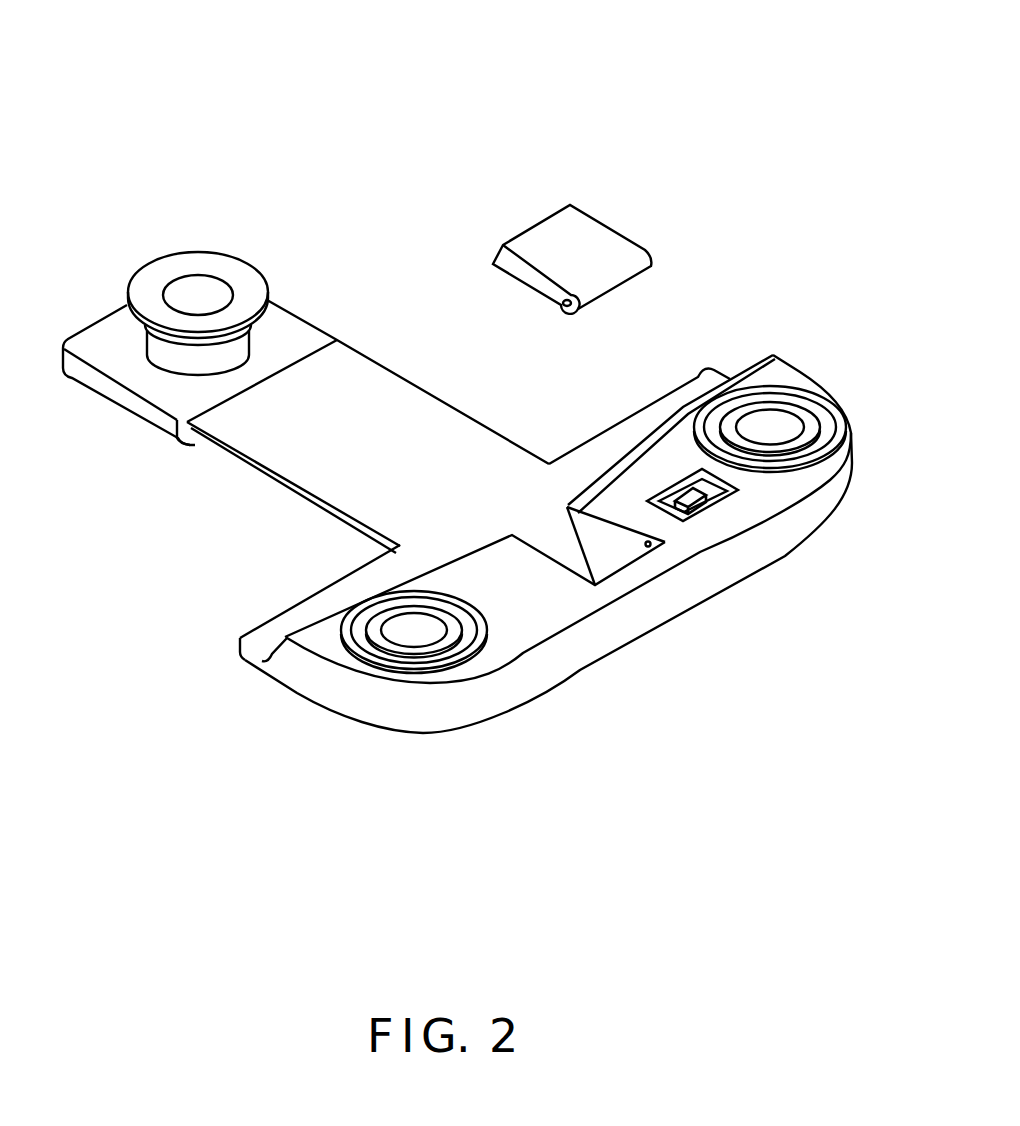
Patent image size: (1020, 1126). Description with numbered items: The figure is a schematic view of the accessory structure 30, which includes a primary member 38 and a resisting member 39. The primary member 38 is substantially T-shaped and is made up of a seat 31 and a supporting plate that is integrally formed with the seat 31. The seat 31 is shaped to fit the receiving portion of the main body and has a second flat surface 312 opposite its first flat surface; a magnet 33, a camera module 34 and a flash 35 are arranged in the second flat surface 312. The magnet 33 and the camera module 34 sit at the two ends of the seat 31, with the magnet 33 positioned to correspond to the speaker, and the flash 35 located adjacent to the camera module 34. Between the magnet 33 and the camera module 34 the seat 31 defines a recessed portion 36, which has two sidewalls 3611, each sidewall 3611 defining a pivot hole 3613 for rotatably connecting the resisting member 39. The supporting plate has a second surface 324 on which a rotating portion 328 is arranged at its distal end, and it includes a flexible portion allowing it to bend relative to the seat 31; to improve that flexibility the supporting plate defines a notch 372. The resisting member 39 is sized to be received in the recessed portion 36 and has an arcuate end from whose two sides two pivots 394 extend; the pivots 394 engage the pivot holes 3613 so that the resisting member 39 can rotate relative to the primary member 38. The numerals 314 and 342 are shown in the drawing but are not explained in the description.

The accessory structure 30 is at (431, 51).
The seat 31 is at (785, 540).
The second flat surface 312 is at (507, 640).
The hook tab 314 is at (327, 613).
The second surface 324 is at (247, 438).
The rotating portion 328 is at (155, 278).
The magnet 33 is at (407, 630).
The camera module 34 is at (765, 423).
The flash 35 is at (703, 507).
The recessed portion 36 is at (593, 545).
The sidewall 3611 is at (623, 532).
The pivot hole 3613 is at (649, 548).
The connecting edge 342 is at (607, 293).
The notch 372 is at (370, 538).
The primary member 38 is at (358, 336).
The resisting member 39 is at (603, 242).
The pivot 394 is at (563, 305).